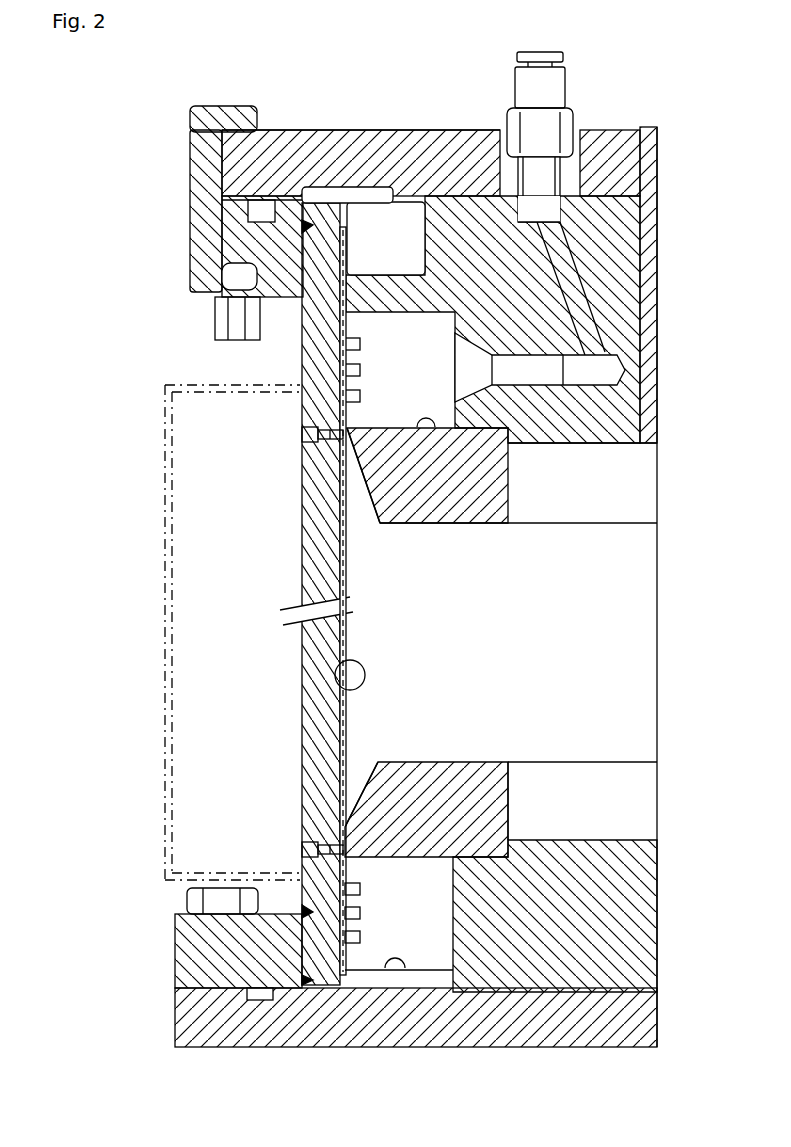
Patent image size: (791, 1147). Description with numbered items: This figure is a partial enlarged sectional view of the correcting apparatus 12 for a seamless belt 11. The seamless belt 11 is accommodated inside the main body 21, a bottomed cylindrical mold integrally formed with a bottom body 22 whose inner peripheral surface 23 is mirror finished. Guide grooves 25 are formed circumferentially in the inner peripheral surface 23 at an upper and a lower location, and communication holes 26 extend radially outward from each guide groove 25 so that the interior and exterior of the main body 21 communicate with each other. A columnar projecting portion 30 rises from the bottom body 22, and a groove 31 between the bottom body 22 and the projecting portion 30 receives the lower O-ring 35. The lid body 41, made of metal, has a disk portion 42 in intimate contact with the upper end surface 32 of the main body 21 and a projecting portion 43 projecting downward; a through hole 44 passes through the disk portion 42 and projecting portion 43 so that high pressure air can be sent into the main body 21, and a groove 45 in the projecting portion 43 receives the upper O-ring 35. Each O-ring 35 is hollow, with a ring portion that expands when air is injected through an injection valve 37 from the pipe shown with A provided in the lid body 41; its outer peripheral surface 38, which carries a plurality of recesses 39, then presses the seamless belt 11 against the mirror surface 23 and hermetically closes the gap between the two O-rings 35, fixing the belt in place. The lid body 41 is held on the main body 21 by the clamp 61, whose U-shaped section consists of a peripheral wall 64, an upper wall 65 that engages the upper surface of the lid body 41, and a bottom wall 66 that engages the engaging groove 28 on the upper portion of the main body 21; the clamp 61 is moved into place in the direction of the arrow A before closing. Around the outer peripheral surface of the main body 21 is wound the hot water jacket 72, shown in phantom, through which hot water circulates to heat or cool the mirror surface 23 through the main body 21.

The correcting apparatus 12 is at (155, 100).
The seamless belt 11 is at (340, 285).
The main body 21 is at (300, 562).
The bottom body 22 is at (175, 1010).
The inner peripheral surface (mirror surface) 23 is at (340, 690).
The guide groove 25 is at (328, 445).
The communication hole 26 is at (305, 420).
The engaging groove 28 is at (230, 272).
The projecting portion 30 is at (462, 760).
The groove 31 is at (395, 975).
The upper end surface 32 is at (222, 203).
The O-ring 35 is at (350, 460).
The injection valve 37 is at (570, 395).
The outer peripheral surface 38 is at (345, 345).
The recess 39 is at (345, 395).
The lid body 41 is at (355, 130).
The disk portion 42 is at (400, 130).
The projecting portion 43 is at (470, 525).
The through hole 44 is at (648, 130).
The groove 45 is at (426, 428).
The clamp 61 is at (185, 222).
The peripheral wall 64 is at (190, 150).
The upper wall 65 is at (222, 105).
The bottom wall 66 is at (212, 297).
The hot water jacket 72 is at (165, 457).
The pipe (arrow A) A is at (540, 195).